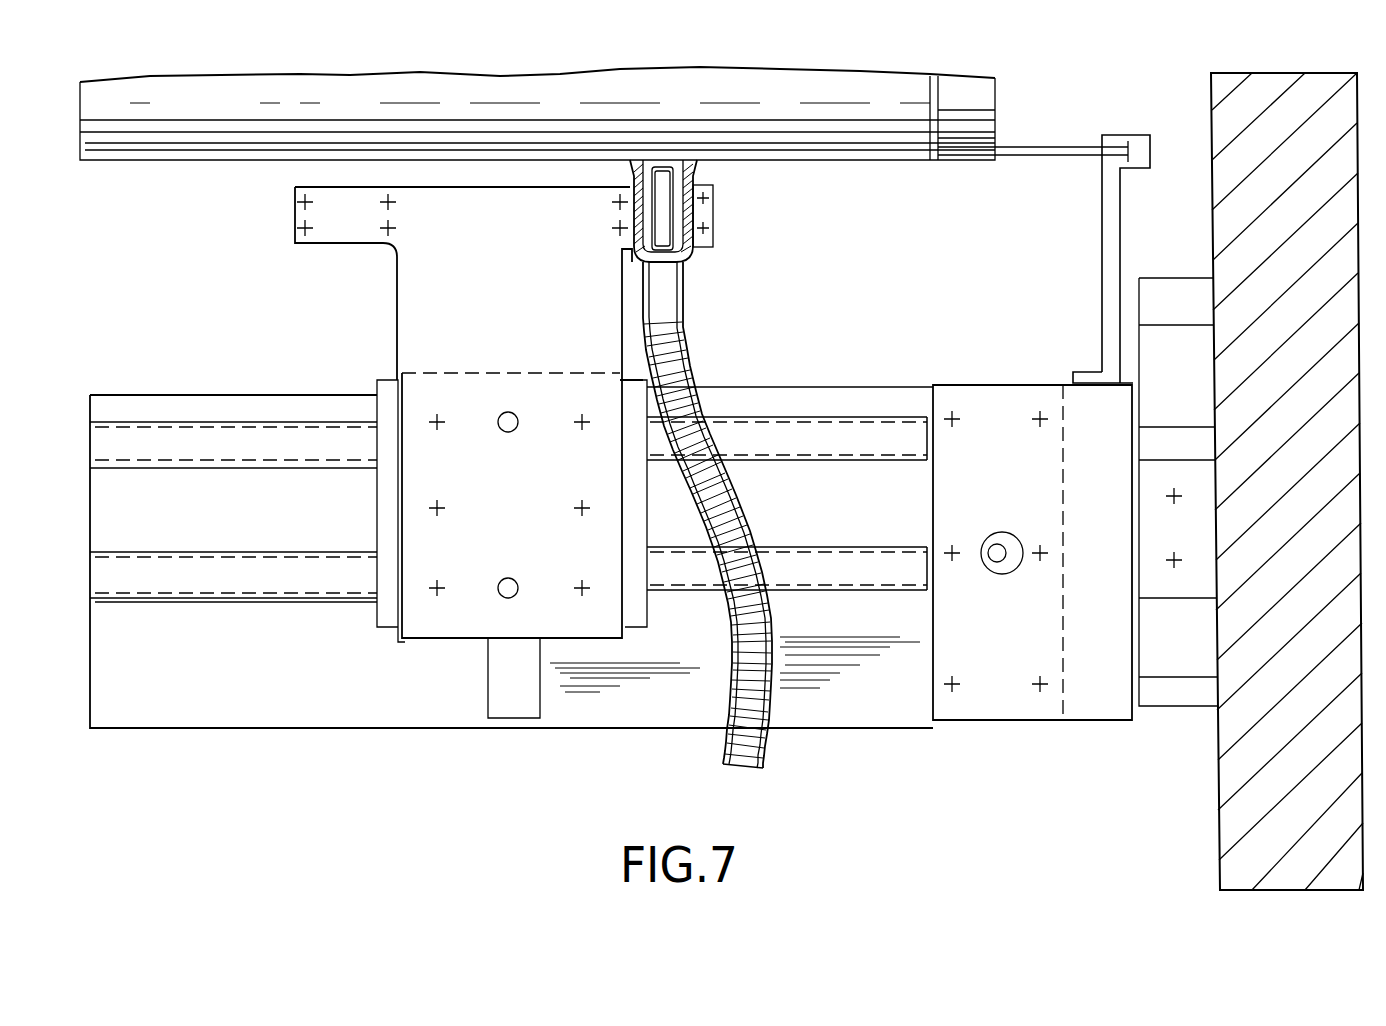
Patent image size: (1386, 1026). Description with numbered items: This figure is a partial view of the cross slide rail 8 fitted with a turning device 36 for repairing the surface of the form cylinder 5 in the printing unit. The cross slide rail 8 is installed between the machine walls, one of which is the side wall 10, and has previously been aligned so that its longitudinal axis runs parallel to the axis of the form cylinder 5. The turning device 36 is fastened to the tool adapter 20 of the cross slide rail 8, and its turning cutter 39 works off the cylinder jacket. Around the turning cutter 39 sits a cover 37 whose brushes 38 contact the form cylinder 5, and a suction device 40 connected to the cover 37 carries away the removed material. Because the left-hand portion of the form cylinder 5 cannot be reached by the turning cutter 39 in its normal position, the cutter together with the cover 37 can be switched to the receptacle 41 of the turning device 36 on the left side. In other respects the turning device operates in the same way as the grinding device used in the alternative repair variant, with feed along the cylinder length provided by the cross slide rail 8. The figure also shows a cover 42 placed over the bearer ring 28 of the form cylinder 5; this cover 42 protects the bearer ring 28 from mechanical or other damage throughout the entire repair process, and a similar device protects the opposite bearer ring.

The form cylinder 5 is at (477, 88).
The cross slide rail 8 is at (297, 687).
The side wall 10 is at (1270, 82).
The tool adapter 20 is at (388, 620).
The bearer ring 28 is at (957, 87).
The turning device 36 is at (600, 630).
The cover 37 is at (697, 172).
The brushes 38 is at (690, 167).
The turning cutter 39 is at (660, 167).
The suction device 40 is at (763, 768).
The receptacle 41 is at (353, 228).
The cover 42 is at (1048, 145).